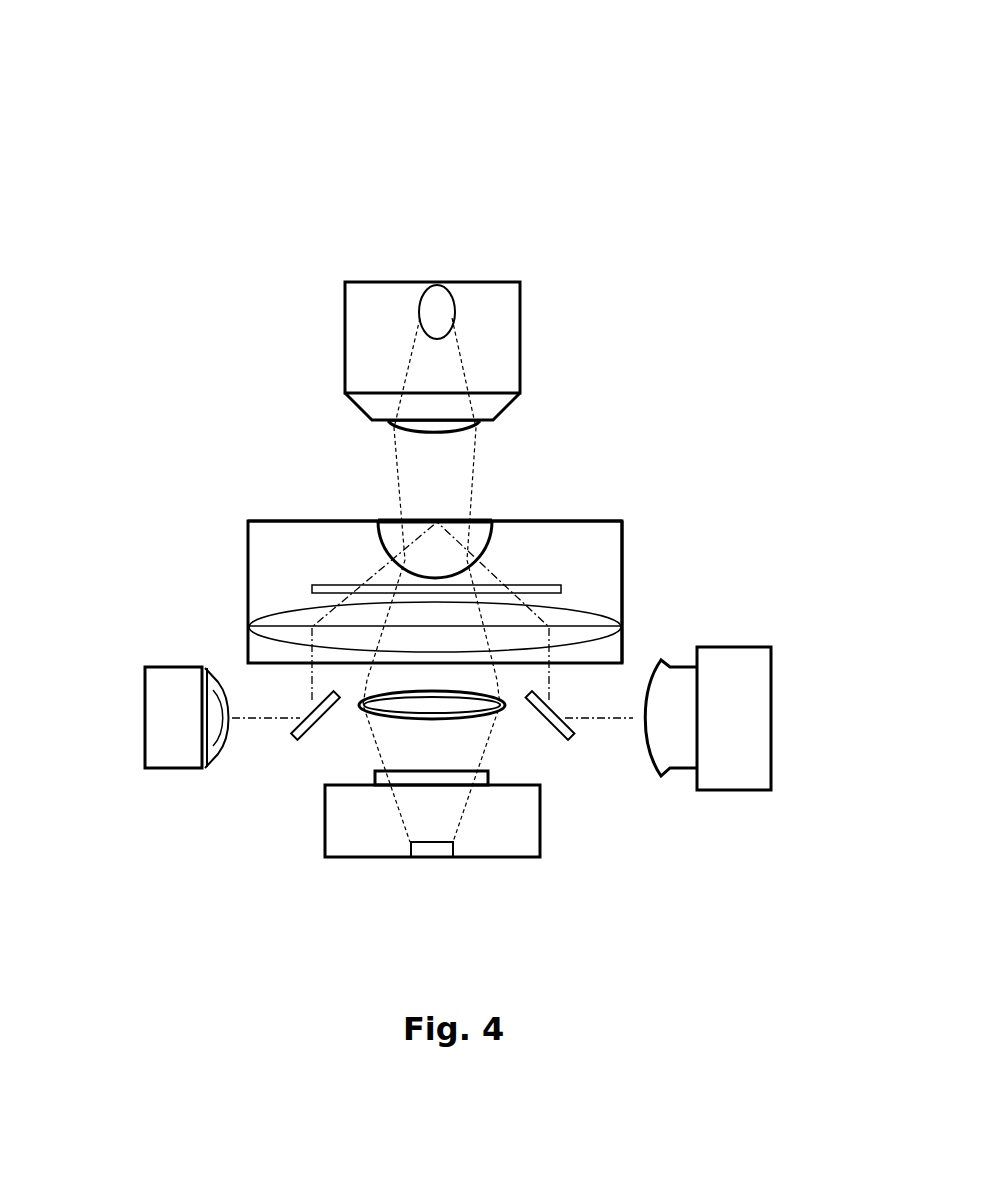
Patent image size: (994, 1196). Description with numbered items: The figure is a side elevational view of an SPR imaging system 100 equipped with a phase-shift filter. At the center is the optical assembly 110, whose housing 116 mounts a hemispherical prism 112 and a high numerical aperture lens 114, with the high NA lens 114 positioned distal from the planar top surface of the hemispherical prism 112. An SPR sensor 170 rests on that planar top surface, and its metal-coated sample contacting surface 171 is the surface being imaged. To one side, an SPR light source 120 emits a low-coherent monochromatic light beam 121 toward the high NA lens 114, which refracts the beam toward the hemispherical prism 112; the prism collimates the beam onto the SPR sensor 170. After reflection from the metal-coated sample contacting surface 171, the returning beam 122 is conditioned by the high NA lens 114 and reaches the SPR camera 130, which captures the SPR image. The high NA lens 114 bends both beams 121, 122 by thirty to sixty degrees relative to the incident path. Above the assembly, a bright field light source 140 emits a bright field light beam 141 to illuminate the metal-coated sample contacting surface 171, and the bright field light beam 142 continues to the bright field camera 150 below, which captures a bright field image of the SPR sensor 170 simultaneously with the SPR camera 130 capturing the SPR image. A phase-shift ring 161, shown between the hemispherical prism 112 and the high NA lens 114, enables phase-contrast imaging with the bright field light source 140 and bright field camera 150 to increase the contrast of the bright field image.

The SPR imaging system 100 is at (176, 178).
The optical assembly 110 is at (624, 496).
The hemispherical prism 112 is at (380, 533).
The high numerical aperture lens 114 is at (266, 620).
The housing 116 is at (622, 617).
The SPR light source 120 is at (148, 743).
The low-coherent monochromatic light beam 121 is at (260, 735).
The low-coherent monochromatic light beam 122 is at (619, 743).
The SPR camera 130 is at (733, 682).
The bright field light source 140 is at (503, 336).
The bright field light beam 141 is at (386, 464).
The bright field light beam 142 is at (505, 741).
The bright field camera 150 is at (477, 850).
The phase-shift ring 161 is at (560, 587).
The SPR sensor 170 is at (477, 506).
The metal-coated sample contacting surface 171 is at (445, 520).